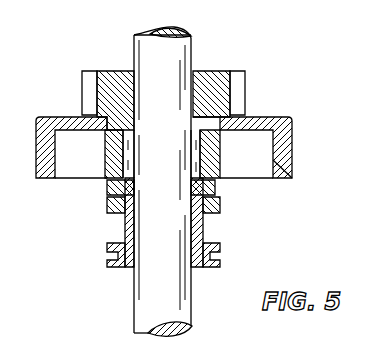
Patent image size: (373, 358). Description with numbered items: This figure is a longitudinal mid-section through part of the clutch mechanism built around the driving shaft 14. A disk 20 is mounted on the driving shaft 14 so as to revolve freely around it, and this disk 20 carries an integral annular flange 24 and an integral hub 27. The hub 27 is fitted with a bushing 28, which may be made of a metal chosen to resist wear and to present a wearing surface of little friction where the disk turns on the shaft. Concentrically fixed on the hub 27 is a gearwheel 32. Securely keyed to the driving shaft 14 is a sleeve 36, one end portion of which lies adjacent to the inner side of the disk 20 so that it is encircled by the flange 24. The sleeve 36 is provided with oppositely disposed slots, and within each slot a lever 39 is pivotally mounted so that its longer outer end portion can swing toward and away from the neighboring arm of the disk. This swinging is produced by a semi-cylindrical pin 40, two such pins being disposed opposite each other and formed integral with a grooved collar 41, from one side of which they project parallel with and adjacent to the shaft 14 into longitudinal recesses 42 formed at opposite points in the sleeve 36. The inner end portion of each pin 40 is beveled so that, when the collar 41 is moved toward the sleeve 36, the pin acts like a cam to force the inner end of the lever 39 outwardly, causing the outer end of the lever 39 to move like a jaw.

The driving shaft 14 is at (188, 300).
The disk 20 is at (293, 122).
The annular flange 24 is at (287, 177).
The hub 27 is at (197, 72).
The bushing 28 is at (132, 70).
The gearwheel 32 is at (240, 86).
The sleeve 36 is at (215, 166).
The lever 39 is at (107, 188).
The semi-cylindrical pin 40 is at (125, 224).
The grooved collar 41 is at (222, 258).
The recess 42 is at (123, 154).